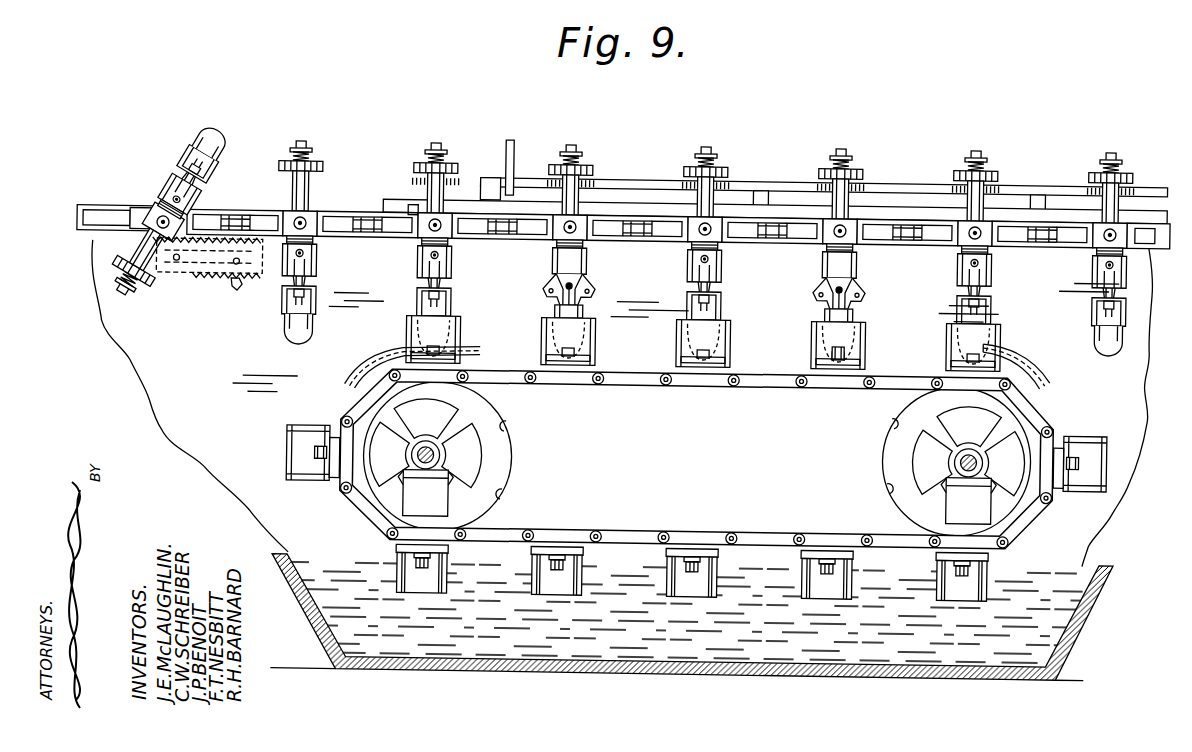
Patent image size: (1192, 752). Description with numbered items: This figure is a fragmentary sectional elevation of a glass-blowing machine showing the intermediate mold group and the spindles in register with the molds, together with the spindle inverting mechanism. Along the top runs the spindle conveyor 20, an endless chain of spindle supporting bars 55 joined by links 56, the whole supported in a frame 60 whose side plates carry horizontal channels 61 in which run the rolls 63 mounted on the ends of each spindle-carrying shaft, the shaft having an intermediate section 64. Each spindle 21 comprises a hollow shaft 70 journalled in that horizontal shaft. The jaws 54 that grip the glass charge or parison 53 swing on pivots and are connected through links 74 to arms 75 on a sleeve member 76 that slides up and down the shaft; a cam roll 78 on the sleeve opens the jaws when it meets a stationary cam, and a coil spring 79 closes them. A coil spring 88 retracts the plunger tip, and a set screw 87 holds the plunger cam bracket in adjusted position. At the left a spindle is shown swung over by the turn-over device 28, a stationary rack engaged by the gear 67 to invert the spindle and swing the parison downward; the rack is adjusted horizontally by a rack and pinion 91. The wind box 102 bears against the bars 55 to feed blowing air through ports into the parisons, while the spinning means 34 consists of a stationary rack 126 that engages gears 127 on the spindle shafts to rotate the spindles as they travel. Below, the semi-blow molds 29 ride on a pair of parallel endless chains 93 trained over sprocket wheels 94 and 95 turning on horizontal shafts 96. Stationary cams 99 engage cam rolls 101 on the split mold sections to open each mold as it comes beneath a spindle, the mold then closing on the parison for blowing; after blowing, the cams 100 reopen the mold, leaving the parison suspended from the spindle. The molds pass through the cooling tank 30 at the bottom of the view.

The spindle conveyor 20 is at (864, 203).
The spindle 21 is at (533, 276).
The turn-over device (stationary rack) 28 is at (228, 271).
The semi-blow mold 29 is at (420, 330).
The cooling tank 30 is at (320, 598).
The spinning means 34 is at (652, 176).
The mold charge (parison) 53 is at (218, 134).
The jaws 54 is at (554, 308).
The spindle supporting links (bars) 55 is at (137, 212).
The links 56 is at (230, 214).
The frame 60 is at (207, 352).
The channels 61 is at (90, 226).
The rolls 63 is at (290, 220).
The intermediate section 64 is at (313, 220).
The gear 67 is at (418, 211).
The hollow shaft 70 is at (308, 197).
The links 74 is at (219, 158).
The arms 75 is at (181, 172).
The sleeve member 76 is at (580, 259).
The cam roll 78 is at (176, 197).
The coil spring 79 is at (313, 242).
The set screw 87 is at (239, 263).
The coil spring 88 is at (308, 152).
The rack and pinion 91 is at (241, 288).
The endless chains 93 is at (659, 366).
The sprocket wheel 94 is at (516, 447).
The sprocket wheel 95 is at (889, 454).
The horizontal shafts 96 is at (437, 455).
The stationary cams 99 is at (380, 342).
The stationary cams 100 is at (1052, 372).
The cam rolls 101 is at (318, 452).
The wind box (air pressure chamber) 102 is at (530, 212).
The stationary rack 126 is at (529, 180).
The gears 127 is at (320, 172).